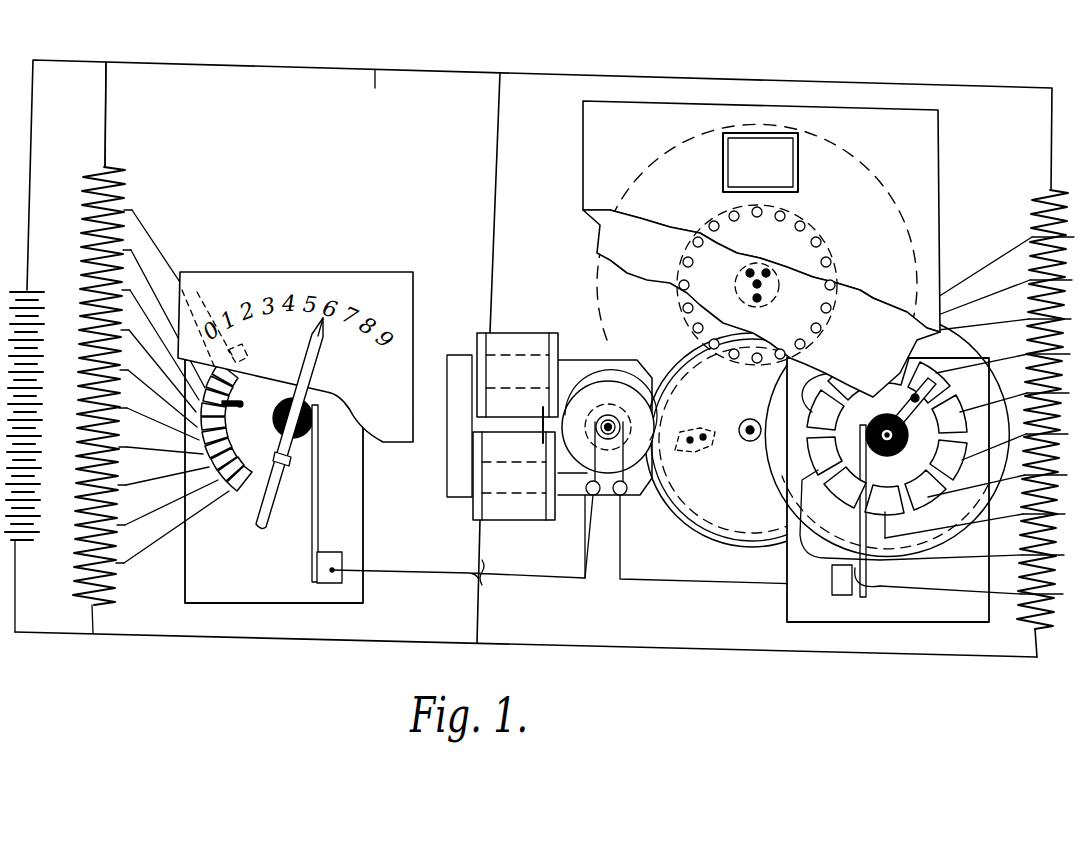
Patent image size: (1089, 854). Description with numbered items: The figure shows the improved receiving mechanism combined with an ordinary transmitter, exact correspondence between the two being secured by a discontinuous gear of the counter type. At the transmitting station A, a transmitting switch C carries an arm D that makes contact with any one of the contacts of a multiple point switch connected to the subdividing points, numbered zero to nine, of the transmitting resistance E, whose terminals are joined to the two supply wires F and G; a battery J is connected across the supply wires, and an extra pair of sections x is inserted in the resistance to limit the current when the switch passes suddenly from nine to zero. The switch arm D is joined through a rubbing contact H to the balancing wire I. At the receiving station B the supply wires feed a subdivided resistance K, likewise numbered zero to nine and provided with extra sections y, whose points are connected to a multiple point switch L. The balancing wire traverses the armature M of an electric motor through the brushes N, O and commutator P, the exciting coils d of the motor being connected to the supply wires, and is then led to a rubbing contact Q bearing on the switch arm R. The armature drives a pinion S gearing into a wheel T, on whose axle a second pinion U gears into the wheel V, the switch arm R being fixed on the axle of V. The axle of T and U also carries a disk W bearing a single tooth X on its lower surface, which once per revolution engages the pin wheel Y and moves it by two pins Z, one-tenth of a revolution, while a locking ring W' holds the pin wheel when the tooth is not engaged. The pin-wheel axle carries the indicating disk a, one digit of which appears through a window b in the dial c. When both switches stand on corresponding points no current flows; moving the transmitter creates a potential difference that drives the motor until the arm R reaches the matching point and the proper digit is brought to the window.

The transmitting station A is at (266, 306).
The receiving station B is at (757, 182).
The supply wire F is at (365, 99).
The supply wire G is at (245, 640).
The transmitting resistance E is at (122, 272).
The additional sections of the transmitting resistance x is at (130, 586).
The battery J is at (38, 528).
The switch arm D is at (252, 412).
The transmitting switch C is at (252, 518).
The rubbing contact H is at (321, 456).
The balancing wire I is at (461, 573).
The exciting coils d is at (508, 522).
The armature M is at (590, 400).
The commutator P is at (607, 418).
The pinion S is at (612, 424).
The brush N is at (588, 483).
The brush O is at (615, 483).
The wheel T is at (671, 356).
The pin wheel Y is at (672, 314).
The pins Z is at (673, 293).
The window b is at (740, 165).
The dial c is at (596, 182).
The indicating disk a is at (612, 240).
The single tooth X is at (695, 447).
The second pinion U is at (748, 440).
The wheel V is at (777, 477).
The disk W is at (750, 446).
The locking ring W' is at (752, 468).
The receiving resistance K is at (1029, 298).
The switch arm R is at (905, 437).
The rubbing contact Q is at (866, 466).
The multiple point switch L is at (918, 618).
The additional sections of the receiving resistance y is at (1022, 616).